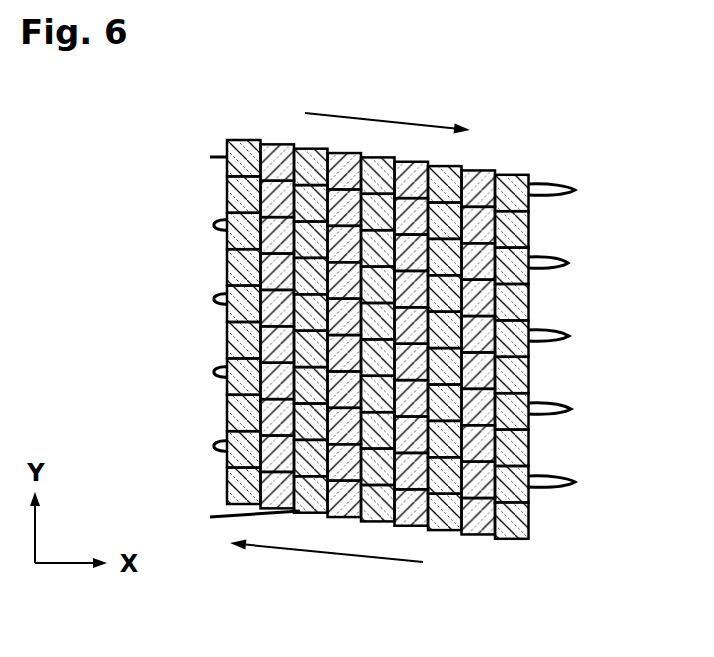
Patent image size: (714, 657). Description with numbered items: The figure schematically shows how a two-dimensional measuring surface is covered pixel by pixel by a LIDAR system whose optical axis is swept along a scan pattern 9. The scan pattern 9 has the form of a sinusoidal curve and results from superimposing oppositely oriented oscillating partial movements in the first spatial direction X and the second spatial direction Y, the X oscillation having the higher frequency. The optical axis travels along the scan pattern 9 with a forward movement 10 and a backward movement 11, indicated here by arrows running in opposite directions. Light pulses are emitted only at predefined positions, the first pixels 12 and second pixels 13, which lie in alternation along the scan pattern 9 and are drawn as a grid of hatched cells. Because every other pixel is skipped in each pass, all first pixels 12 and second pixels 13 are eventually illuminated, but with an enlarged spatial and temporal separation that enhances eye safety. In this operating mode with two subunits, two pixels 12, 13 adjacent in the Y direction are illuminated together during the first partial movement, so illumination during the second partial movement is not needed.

The scan pattern 9 is at (438, 298).
The forward movement 10 is at (353, 115).
The backward movement 11 is at (353, 557).
The first pixels 12 is at (235, 140).
The second pixels 13 is at (287, 147).